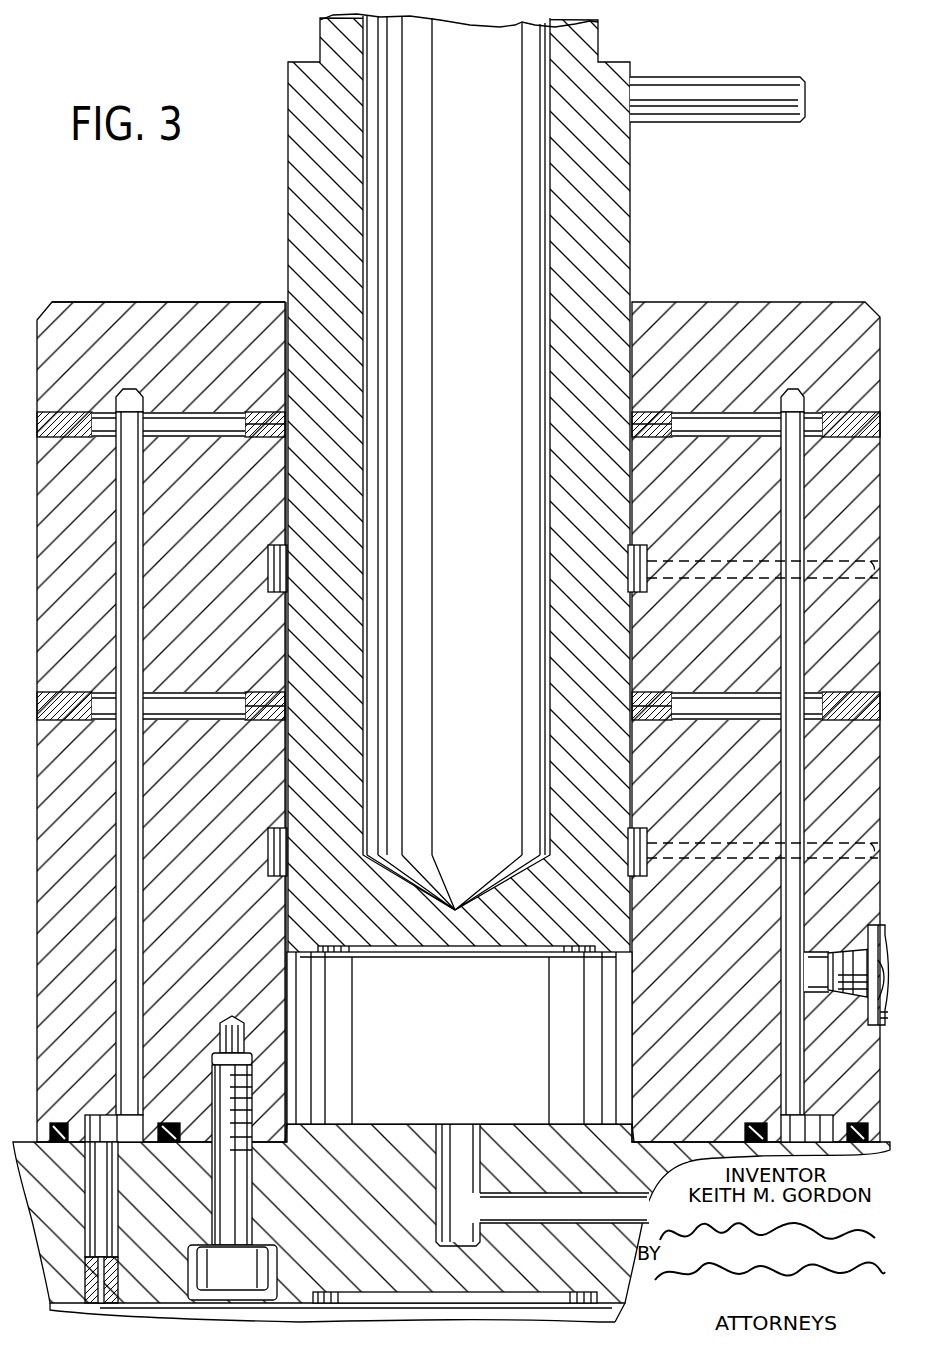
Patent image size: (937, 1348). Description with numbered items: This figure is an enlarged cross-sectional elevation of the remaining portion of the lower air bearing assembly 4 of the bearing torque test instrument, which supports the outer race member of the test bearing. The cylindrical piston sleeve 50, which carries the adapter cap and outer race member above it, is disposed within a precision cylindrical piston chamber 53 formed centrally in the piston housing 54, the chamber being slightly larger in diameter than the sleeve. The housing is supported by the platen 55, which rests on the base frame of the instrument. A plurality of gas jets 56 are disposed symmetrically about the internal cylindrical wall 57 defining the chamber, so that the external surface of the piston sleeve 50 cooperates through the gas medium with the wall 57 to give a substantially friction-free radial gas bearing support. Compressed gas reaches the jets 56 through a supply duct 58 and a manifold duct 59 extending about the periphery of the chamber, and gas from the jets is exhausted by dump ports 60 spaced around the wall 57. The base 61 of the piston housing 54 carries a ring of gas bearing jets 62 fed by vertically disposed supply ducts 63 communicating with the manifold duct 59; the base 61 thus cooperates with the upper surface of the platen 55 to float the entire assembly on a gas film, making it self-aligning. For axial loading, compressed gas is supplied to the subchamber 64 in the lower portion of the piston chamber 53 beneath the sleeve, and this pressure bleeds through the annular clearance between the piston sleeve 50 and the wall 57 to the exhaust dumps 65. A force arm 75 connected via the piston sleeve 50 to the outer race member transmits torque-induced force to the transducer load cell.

The lower air bearing assembly 4 is at (88, 273).
The piston sleeve 50 is at (618, 249).
The piston chamber 53 is at (284, 295).
The piston housing 54 is at (167, 302).
The platen 55 is at (353, 1305).
The gas jets 56 is at (263, 410).
The internal cylindrical wall 57 is at (625, 497).
The supply duct 58 is at (168, 432).
The manifold duct 59 is at (137, 567).
The dump ports 60 is at (683, 566).
The base of the piston housing 61 is at (333, 1137).
The gas bearing jets 62 is at (100, 1280).
The vertically disposed supply ducts 63 is at (114, 1184).
The subchamber 64 is at (472, 1047).
The exhaust dumps 65 is at (700, 850).
The force arm 75 is at (716, 84).